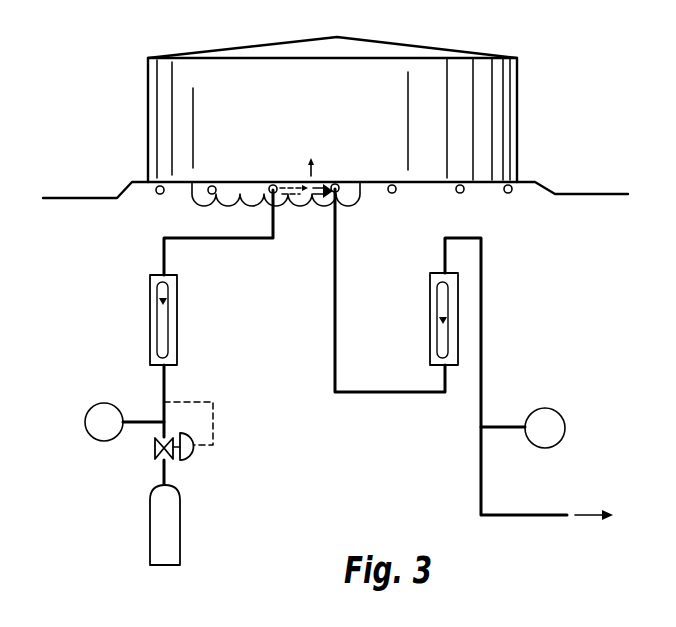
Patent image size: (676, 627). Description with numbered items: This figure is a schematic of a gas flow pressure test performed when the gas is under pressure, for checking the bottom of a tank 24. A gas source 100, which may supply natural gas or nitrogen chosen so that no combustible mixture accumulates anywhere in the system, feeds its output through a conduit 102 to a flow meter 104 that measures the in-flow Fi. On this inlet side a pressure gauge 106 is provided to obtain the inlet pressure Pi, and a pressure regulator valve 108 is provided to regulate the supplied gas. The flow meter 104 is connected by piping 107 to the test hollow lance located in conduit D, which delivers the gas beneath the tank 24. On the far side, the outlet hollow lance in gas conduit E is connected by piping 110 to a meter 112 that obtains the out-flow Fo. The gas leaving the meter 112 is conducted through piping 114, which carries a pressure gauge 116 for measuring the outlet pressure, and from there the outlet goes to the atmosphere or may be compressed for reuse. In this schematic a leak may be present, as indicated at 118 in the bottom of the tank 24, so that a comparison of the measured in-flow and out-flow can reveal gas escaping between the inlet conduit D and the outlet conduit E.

The tank 24 is at (517, 120).
The gas source 100 is at (181, 548).
The conduit 102 is at (164, 392).
The flow meter 104 is at (150, 285).
The pressure gauge 106 is at (103, 442).
The piping 107 is at (240, 240).
The pressure regulator valve 108 is at (195, 447).
The piping 110 is at (334, 328).
The meter 112 is at (430, 305).
The piping 114 is at (481, 322).
The pressure gauge 116 is at (556, 446).
The leak 118 is at (316, 171).
The conduit D is at (280, 181).
The conduit E is at (334, 181).